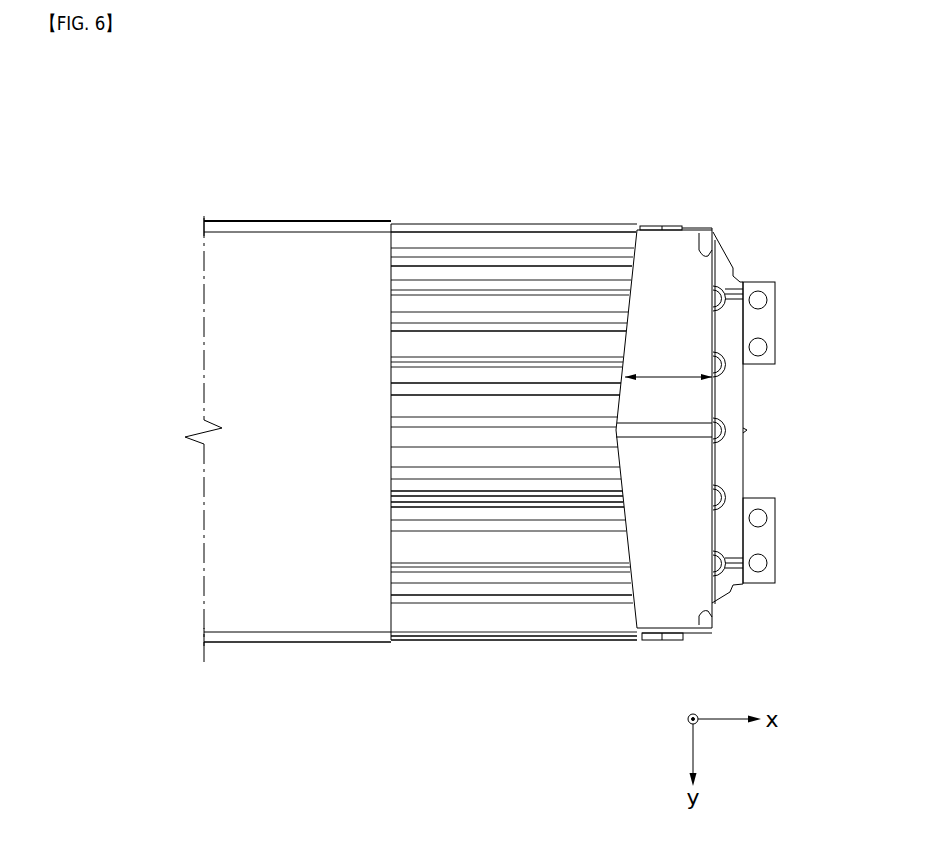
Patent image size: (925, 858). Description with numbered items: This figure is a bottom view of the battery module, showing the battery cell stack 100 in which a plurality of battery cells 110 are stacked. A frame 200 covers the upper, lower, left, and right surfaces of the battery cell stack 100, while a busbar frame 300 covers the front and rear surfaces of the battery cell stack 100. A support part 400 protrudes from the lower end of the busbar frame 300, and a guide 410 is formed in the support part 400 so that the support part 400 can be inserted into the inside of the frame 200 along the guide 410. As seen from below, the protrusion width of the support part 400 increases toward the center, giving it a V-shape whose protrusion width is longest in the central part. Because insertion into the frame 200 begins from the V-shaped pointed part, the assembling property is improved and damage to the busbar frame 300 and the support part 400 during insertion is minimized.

The battery cell stack 100 is at (604, 360).
The battery cells 110 is at (464, 292).
The frame 200 is at (291, 258).
The busbar frame 300 is at (737, 408).
The support part 400 is at (675, 257).
The guide 410 is at (670, 432).